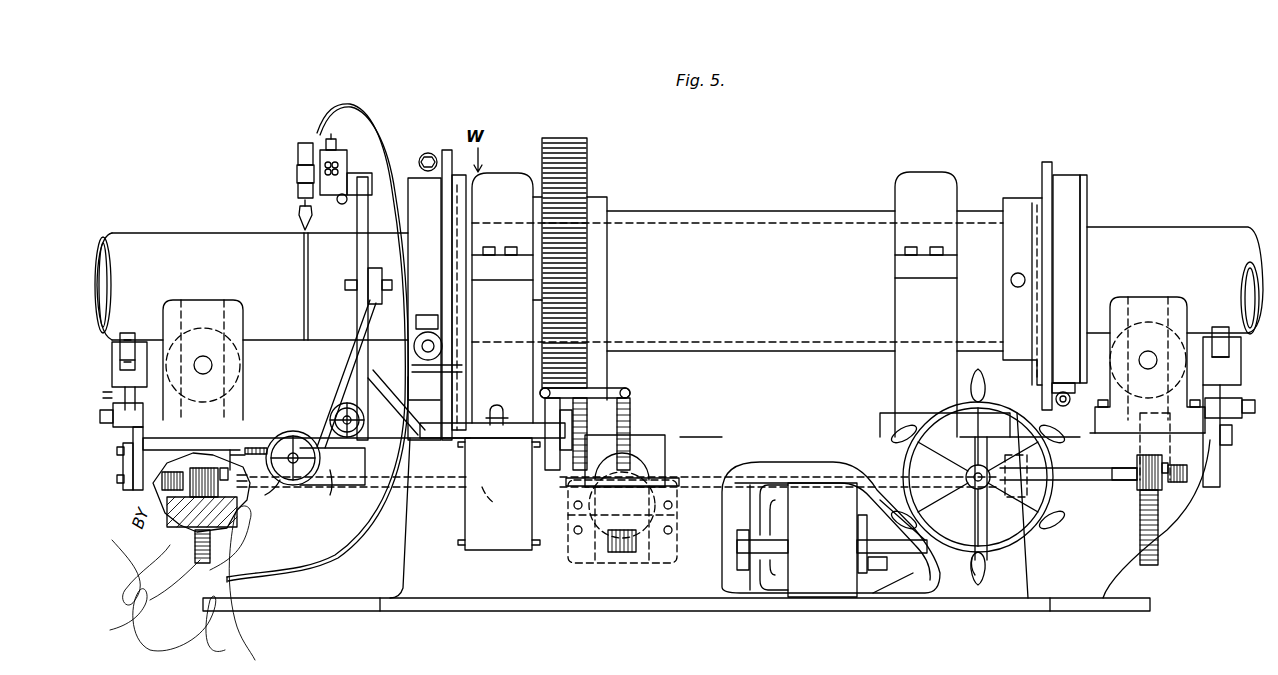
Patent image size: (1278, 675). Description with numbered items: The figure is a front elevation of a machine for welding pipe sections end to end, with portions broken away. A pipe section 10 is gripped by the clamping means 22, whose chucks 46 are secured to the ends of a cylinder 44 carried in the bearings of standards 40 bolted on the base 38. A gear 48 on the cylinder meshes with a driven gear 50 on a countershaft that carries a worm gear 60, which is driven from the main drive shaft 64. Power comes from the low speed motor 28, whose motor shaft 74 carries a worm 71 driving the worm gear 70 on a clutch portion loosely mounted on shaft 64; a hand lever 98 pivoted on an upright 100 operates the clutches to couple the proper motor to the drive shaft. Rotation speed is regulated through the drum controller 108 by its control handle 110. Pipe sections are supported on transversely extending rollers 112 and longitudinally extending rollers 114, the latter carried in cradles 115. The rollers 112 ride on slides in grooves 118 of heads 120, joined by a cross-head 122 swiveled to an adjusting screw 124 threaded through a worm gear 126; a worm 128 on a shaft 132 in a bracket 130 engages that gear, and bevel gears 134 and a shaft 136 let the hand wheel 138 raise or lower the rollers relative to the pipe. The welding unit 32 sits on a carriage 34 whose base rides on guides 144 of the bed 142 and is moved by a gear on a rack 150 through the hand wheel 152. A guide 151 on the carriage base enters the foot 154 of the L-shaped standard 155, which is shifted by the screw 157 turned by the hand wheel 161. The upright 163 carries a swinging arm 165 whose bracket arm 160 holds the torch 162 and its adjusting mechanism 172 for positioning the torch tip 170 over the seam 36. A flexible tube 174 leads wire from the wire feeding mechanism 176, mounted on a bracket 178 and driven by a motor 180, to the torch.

The pipe section 10 is at (679, 283).
The clamping means 22 is at (744, 307).
The low speed motor 28 is at (822, 540).
The welding unit 32 is at (297, 166).
The carriage 34 is at (300, 440).
The seam 36 is at (304, 256).
The base 38 is at (528, 600).
The bearing standards 40 is at (784, 385).
The cylinder 44 is at (737, 281).
The chucks 46 is at (408, 190).
The gear 48 is at (588, 174).
The driven gear 50 is at (585, 430).
The worm gear 60 is at (630, 404).
The main drive shaft 64 is at (672, 510).
The worm gear 70 is at (580, 528).
The worm 71 is at (626, 558).
The motor shaft 74 is at (728, 560).
The hand lever 98 is at (606, 388).
The upright 100 is at (570, 440).
The drum controller 108 is at (465, 518).
The control handle 110 is at (510, 405).
The transversely extending rollers 112 is at (240, 346).
The longitudinally extending rollers 114 is at (128, 322).
The cradles 115 is at (112, 383).
The grooves 118 is at (232, 318).
The heads 120 is at (170, 300).
The cross-head 122 is at (248, 382).
The adjusting screw 124 is at (212, 550).
The worm gear 126 is at (180, 462).
The worm 128 is at (245, 485).
The bracket 130 is at (668, 470).
The shaft 132 is at (501, 499).
The bevel gears 134 is at (1000, 500).
The shaft 136 is at (975, 500).
The hand wheel 138 is at (965, 552).
The bed 142 is at (272, 430).
The guides 144 is at (262, 447).
The rack 150 is at (282, 486).
The guide 151 is at (341, 464).
The hand wheel 152 is at (348, 404).
The foot 154 is at (380, 420).
The L-shaped standard 155 is at (358, 320).
The worm or screw 157 is at (332, 488).
The bracket arm 160 is at (359, 170).
The hand wheel 161 is at (346, 374).
The torch 162 is at (297, 150).
The upright 163 is at (368, 300).
The arm 165 is at (357, 247).
The torch tip 170 is at (298, 221).
The adjusting mechanism 172 is at (331, 195).
The flexible tube 174 is at (318, 120).
The wire feeding mechanism 176 is at (426, 300).
The bracket 178 is at (445, 372).
The motor 180 is at (443, 345).